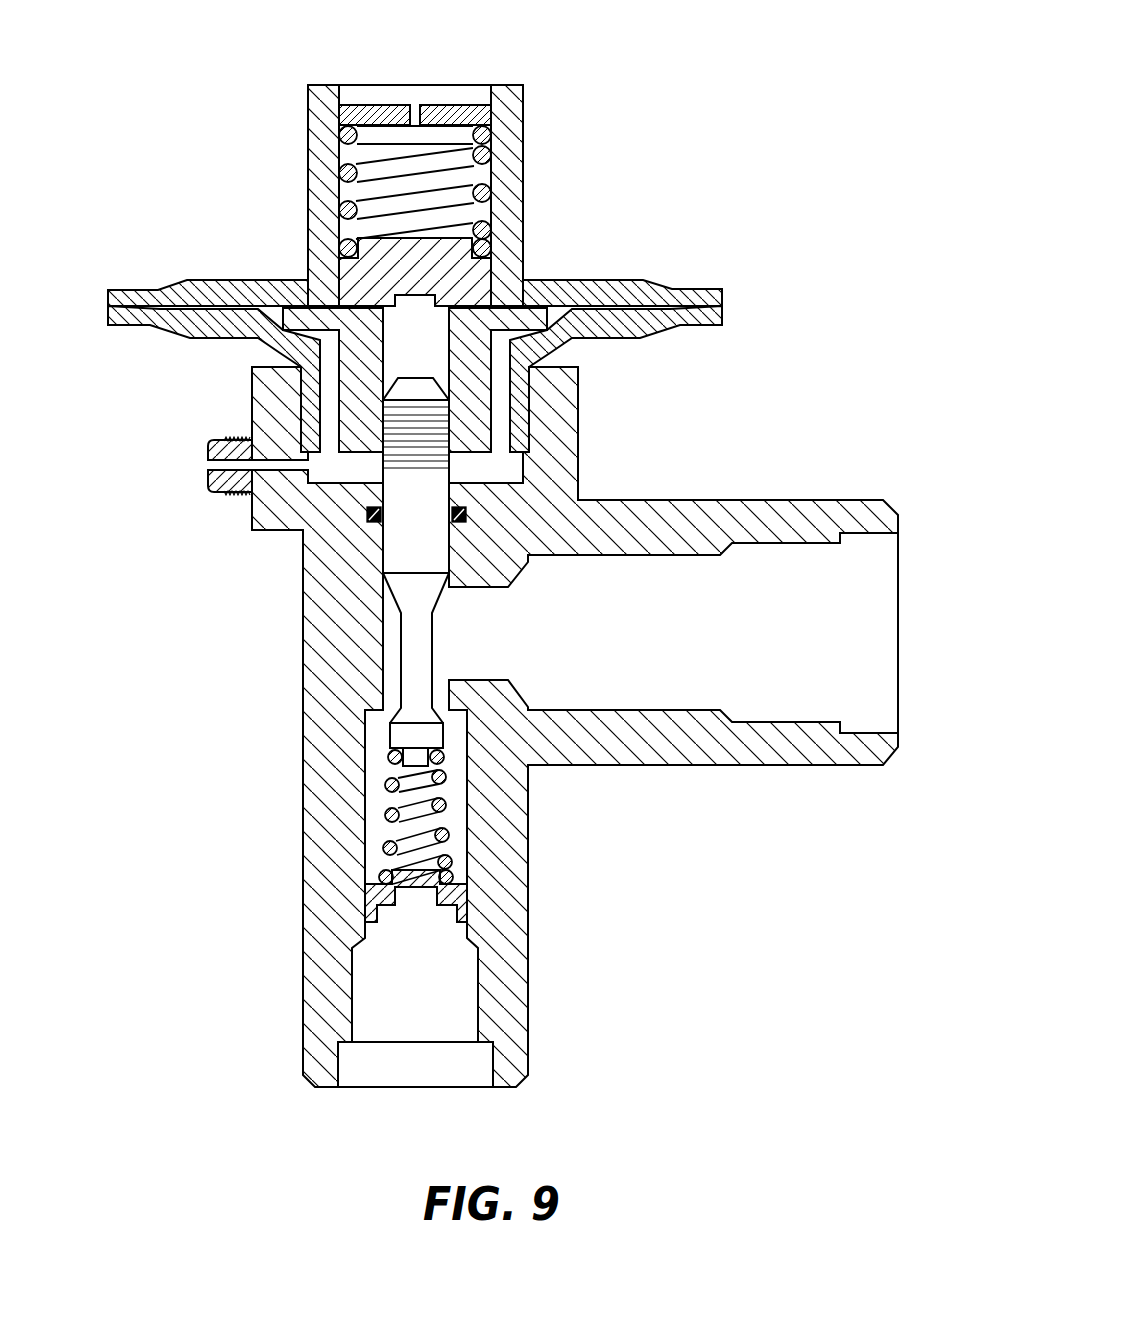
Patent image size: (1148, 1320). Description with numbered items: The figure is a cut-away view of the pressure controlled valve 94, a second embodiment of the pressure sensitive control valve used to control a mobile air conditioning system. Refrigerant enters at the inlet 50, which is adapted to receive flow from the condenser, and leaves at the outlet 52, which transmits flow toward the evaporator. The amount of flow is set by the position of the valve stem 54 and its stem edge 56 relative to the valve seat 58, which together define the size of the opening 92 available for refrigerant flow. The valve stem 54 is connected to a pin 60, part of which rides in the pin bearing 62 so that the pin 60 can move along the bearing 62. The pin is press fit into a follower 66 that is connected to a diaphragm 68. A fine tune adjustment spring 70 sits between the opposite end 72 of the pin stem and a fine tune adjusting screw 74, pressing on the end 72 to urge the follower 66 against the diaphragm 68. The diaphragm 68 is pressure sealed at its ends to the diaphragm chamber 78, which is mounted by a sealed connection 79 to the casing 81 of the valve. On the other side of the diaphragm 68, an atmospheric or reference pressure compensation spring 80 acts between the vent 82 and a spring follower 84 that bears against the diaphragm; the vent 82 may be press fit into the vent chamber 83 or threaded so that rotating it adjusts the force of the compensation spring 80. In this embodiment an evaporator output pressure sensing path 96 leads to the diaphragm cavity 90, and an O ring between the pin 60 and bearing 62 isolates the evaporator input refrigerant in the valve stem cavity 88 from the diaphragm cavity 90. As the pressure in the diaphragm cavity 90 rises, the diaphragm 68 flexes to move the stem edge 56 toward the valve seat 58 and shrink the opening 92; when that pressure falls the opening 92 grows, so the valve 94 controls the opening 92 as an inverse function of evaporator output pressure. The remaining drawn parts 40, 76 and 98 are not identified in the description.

The actuator assembly 40 is at (415, 154).
The vent 82 is at (452, 105).
The pressure controlled valve 94 is at (534, 564).
The atmospheric or reference pressure compensation spring 80 is at (491, 185).
The vent chamber 83 is at (523, 217).
The spring follower 84 is at (350, 270).
The diaphragm 68 is at (431, 339).
The diaphragm chamber 78 is at (697, 288).
The lower diaphragm plate 76 is at (426, 379).
The follower 66 is at (345, 397).
The sealed connection 79 is at (522, 402).
The diaphragm cavity 90 is at (497, 467).
The evaporator output pressure sensing path 96 is at (215, 442).
The pin 60 is at (306, 570).
The O-ring seal 98 is at (367, 512).
The pin bearing 62 is at (606, 727).
The outlet 52 is at (870, 557).
The valve stem 54 is at (400, 650).
The valve stem cavity 88 is at (483, 643).
The valve seat 58 is at (365, 700).
The stem edge 56 is at (392, 730).
The opposite end 72 is at (388, 748).
The fine tune adjustment spring 70 is at (387, 847).
The fine tune adjusting screw 74 is at (372, 900).
The opening 92 is at (447, 716).
The casing 81 is at (683, 765).
The inlet 50 is at (435, 1080).